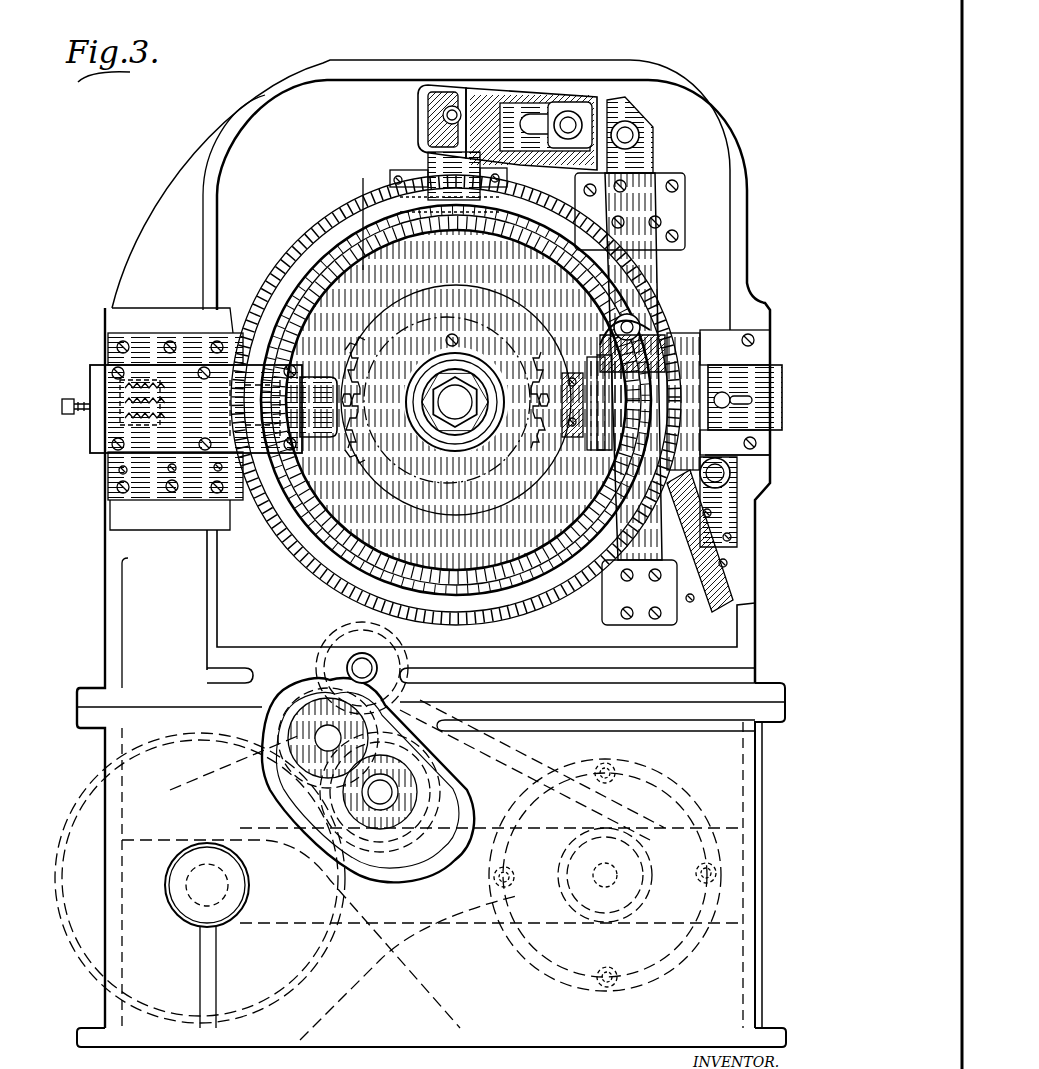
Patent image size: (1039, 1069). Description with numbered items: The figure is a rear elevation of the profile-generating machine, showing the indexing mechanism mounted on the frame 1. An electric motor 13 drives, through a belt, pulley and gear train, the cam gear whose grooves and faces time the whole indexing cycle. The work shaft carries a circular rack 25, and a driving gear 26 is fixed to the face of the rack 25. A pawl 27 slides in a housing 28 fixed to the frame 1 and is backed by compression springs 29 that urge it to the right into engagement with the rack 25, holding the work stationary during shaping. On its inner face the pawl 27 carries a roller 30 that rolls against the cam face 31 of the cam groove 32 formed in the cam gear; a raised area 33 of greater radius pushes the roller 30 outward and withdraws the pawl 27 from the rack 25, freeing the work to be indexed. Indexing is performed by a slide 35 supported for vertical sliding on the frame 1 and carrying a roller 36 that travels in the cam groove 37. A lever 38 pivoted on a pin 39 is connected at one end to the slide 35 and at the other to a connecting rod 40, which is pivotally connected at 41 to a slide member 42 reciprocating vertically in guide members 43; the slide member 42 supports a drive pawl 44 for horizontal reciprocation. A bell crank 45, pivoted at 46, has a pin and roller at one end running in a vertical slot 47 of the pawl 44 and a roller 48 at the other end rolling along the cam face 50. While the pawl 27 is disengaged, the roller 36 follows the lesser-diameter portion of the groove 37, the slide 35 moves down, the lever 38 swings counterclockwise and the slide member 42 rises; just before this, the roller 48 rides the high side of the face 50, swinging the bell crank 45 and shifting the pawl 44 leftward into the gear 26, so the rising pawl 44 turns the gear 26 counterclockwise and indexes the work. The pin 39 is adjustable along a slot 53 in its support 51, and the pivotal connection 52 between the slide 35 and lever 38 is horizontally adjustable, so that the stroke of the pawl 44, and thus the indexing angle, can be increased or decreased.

The frame 1 is at (158, 220).
The electric motor 13 is at (655, 810).
The circular rack 25 is at (352, 462).
The driving gear 26 is at (455, 403).
The pawl 27 is at (452, 400).
The housing 28 is at (100, 453).
The compression springs 29 is at (100, 386).
The roller 30 is at (278, 452).
The cam face 31 is at (510, 580).
The cam groove 32 is at (356, 245).
The raised area 33 is at (330, 280).
The slide 35 is at (440, 152).
The roller 36 is at (500, 192).
The cam groove 37 is at (563, 580).
The lever 38 is at (605, 128).
The pin 39 is at (575, 122).
The connecting rod 40 is at (652, 167).
The pivotal connection 41 is at (640, 318).
The slide member 42 is at (660, 335).
The guide members 43 is at (735, 330).
The drive pawl 44 is at (596, 355).
The bell crank 45 is at (732, 455).
The pivot 46 is at (732, 478).
The vertical slot 47 is at (745, 372).
The roller 48 is at (730, 520).
The cam face 50 is at (365, 178).
The support 51 is at (600, 112).
The pivotal connection 52 is at (462, 110).
The slot 53 is at (532, 122).